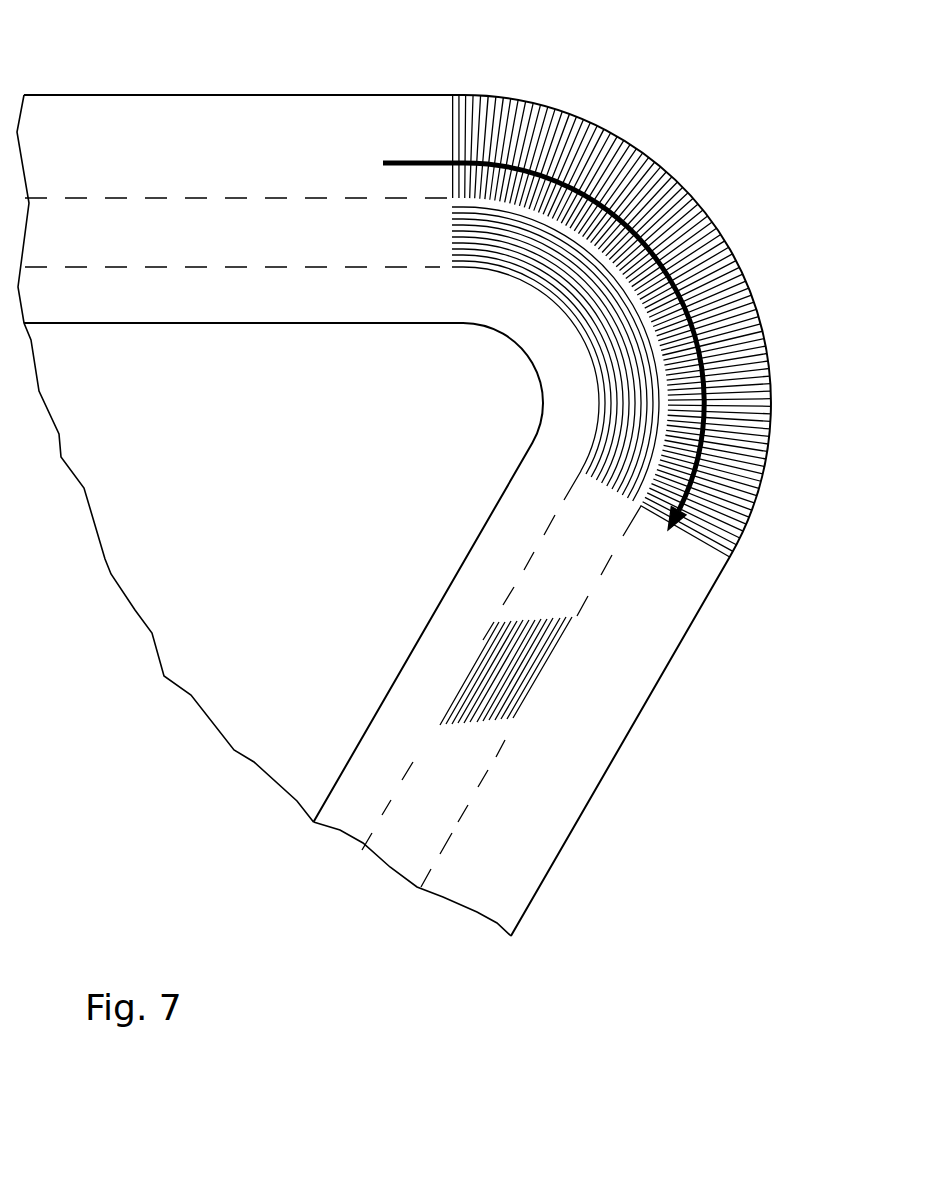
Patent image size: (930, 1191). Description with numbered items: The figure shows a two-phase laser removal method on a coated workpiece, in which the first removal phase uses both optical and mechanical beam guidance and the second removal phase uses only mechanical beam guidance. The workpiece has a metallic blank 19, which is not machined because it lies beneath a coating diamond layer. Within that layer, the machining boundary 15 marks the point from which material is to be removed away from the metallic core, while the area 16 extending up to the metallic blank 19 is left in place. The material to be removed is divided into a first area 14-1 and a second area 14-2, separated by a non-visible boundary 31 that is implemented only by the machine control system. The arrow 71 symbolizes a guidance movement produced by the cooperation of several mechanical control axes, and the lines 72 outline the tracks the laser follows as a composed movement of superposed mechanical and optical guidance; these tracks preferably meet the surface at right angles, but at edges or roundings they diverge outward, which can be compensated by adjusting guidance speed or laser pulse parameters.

The arrow 71 is at (403, 162).
The lines 72 is at (587, 138).
The metallic blank 19 is at (168, 598).
The machining boundary 15 is at (405, 772).
The area 16 is at (352, 808).
The first area 14-1 is at (488, 872).
The second area 14-2 is at (417, 833).
The non-visible boundary 31 is at (486, 776).